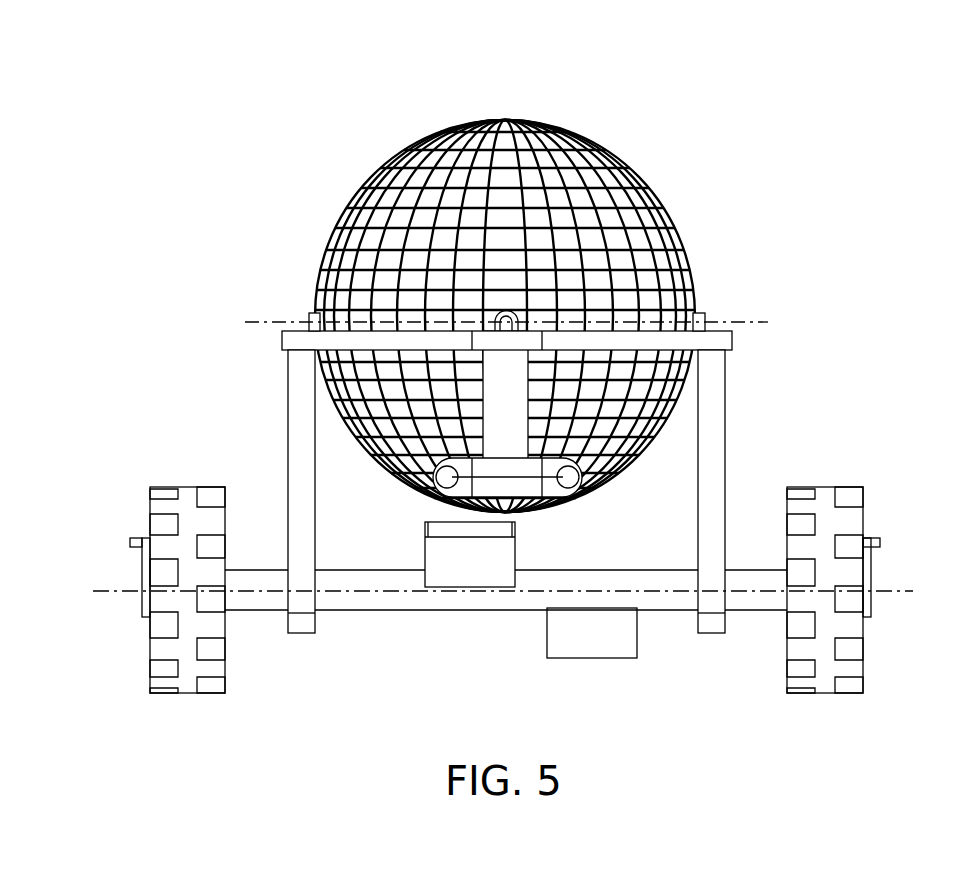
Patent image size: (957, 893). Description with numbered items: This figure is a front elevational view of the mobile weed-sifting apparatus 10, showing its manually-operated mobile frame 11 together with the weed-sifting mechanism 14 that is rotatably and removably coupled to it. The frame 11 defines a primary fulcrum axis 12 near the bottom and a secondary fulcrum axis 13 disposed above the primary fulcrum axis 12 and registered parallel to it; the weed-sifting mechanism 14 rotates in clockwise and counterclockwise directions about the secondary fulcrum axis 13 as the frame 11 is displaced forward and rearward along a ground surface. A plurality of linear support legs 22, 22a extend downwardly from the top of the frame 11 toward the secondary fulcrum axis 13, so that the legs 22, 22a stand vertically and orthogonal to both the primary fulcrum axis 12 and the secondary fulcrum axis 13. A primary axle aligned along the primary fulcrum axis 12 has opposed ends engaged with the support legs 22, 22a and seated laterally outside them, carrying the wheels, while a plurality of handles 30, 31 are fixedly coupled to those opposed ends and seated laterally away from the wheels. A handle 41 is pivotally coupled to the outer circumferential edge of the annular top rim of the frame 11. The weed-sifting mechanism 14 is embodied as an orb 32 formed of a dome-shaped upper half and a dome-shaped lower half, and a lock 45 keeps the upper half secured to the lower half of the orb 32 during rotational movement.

The mobile weed-sifting apparatus 10 is at (500, 368).
The mobile frame 11 is at (751, 417).
The primary fulcrum axis 12 is at (117, 590).
The secondary fulcrum axis 13 is at (762, 322).
The weed-sifting mechanism 14 is at (269, 269).
The linear support leg 22 is at (297, 470).
The linear support leg 22a is at (713, 473).
The handle 30 is at (135, 543).
The handle 31 is at (880, 545).
The orb 32 is at (683, 174).
The handle 41 is at (518, 440).
The lock 45 is at (520, 313).